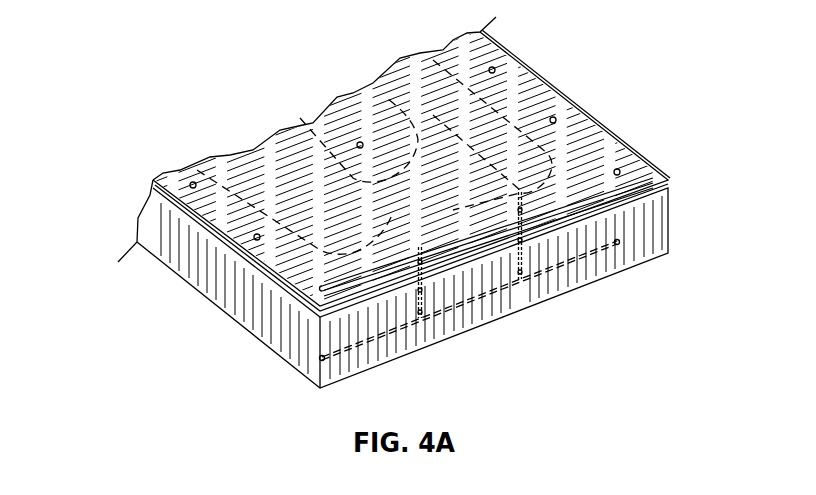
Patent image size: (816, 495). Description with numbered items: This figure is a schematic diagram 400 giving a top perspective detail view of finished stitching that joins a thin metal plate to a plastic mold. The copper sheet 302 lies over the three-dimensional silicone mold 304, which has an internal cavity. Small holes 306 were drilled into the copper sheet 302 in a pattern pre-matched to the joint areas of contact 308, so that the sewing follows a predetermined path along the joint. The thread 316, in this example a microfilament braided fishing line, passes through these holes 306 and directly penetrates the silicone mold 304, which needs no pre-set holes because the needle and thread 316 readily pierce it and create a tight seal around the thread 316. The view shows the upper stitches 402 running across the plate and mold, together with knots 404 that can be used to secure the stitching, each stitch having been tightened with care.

The schematic diagram 400 is at (133, 30).
The copper sheet 302 is at (478, 53).
The silicone mold 304 is at (637, 250).
The holes 306 is at (360, 142).
The joint areas of contact 308 is at (197, 170).
The thread 316 is at (462, 300).
The upper stitches 402 is at (445, 235).
The knots 404 is at (532, 293).